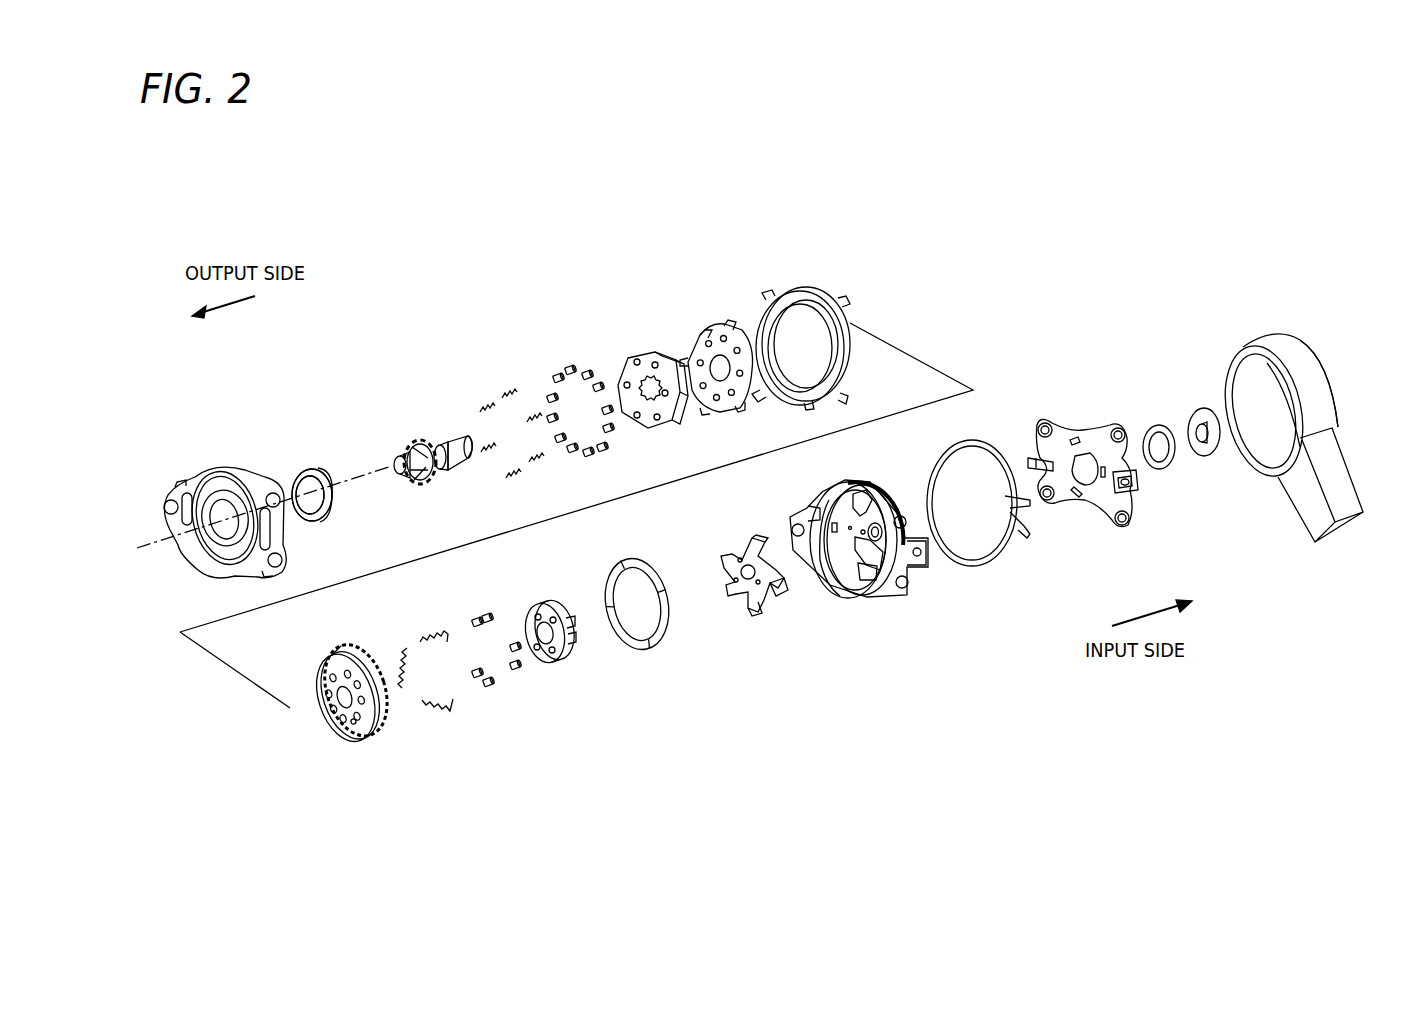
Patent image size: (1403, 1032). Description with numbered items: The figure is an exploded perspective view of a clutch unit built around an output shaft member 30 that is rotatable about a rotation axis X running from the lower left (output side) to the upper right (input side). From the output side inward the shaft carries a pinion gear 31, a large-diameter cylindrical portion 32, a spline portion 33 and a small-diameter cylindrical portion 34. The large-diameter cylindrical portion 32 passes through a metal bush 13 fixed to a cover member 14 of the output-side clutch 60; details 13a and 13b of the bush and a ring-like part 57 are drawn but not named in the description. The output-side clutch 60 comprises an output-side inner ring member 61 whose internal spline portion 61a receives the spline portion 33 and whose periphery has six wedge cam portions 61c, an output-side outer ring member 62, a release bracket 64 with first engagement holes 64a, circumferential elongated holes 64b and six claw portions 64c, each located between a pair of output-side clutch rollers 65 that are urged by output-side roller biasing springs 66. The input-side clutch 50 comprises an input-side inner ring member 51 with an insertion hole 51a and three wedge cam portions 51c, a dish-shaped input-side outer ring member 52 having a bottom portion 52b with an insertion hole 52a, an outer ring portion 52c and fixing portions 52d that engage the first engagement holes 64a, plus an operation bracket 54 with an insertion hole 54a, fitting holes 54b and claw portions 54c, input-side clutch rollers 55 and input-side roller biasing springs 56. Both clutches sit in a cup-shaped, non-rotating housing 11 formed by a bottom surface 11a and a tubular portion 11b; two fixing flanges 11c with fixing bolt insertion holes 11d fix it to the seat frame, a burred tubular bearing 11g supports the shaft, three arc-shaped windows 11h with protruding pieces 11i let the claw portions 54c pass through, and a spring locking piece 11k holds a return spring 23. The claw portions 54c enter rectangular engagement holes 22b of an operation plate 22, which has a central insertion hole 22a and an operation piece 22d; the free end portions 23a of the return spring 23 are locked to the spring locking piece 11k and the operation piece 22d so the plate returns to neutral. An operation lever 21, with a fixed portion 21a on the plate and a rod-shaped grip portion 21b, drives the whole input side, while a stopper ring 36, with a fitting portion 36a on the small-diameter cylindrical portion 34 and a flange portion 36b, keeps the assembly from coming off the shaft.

The housing 11 is at (857, 560).
The bottom surface 11a is at (852, 496).
The tubular portion 11b is at (862, 484).
The fixing flange 11c is at (800, 500).
The fixing bolt insertion hole 11d is at (793, 525).
The bearing 11g is at (878, 492).
The window 11h is at (866, 575).
The protruding piece 11i is at (858, 585).
The spring locking piece 11k is at (922, 567).
The metal bush 13 is at (275, 440).
The bearing ring 13a is at (313, 468).
The bearing inner ring 13b is at (320, 522).
The cover member 14 is at (212, 467).
The operation lever 21 is at (1288, 428).
The fixed portion 21a is at (1295, 353).
The grip portion 21b is at (1324, 545).
The operation plate 22 is at (1102, 434).
The insertion hole 22a is at (1086, 455).
The engagement hole 22b is at (1072, 440).
The operation piece 22d is at (1138, 492).
The return spring 23 is at (998, 555).
The free end portion 23a is at (1028, 536).
The output shaft member 30 is at (407, 442).
The pinion gear 31 is at (395, 455).
The large-diameter cylindrical portion 32 is at (430, 480).
The spline portion 33 is at (436, 445).
The small-diameter cylindrical portion 34 is at (452, 440).
The stopper ring 36 is at (1178, 438).
The fitting portion 36a is at (1192, 428).
The flange portion 36b is at (1204, 420).
The input-side clutch 50 is at (608, 798).
The input-side inner ring member 51 is at (543, 664).
The insertion hole 51a is at (532, 622).
The wedge cam portion 51c is at (572, 652).
The input-side outer ring member 52 is at (322, 725).
The insertion hole 52a is at (335, 702).
The bottom portion 52b is at (365, 738).
The outer ring portion 52c is at (336, 655).
The fixing portion 52d is at (345, 722).
The operation bracket 54 is at (759, 602).
The insertion hole 54a is at (745, 542).
The fitting hole 54b is at (750, 605).
The claw portion 54c is at (781, 598).
The input-side clutch roller 55 is at (492, 700).
The input-side roller biasing spring 56 is at (436, 731).
The thin ring 57 is at (655, 655).
The output-side clutch 60 is at (499, 237).
The output-side inner ring member 61 is at (625, 362).
The spline portion 61a is at (640, 380).
The wedge cam portion 61c is at (656, 425).
The output-side outer ring member 62 is at (786, 291).
The release bracket 64 is at (693, 339).
The first engagement hole 64a is at (727, 410).
The elongated hole 64b is at (718, 325).
The claw portion 64c is at (688, 356).
The output-side clutch roller 65 is at (551, 356).
The output-side roller biasing spring 66 is at (490, 380).